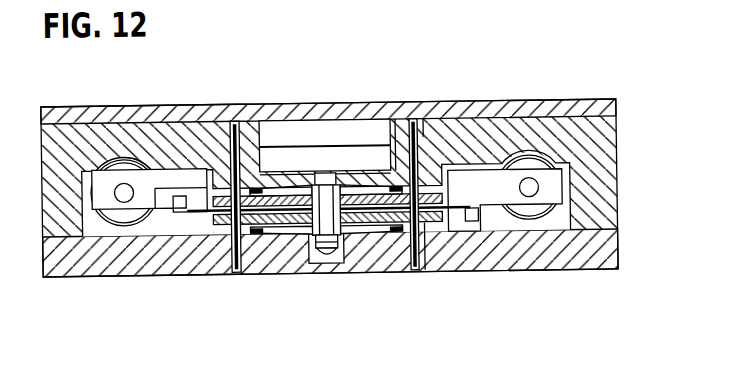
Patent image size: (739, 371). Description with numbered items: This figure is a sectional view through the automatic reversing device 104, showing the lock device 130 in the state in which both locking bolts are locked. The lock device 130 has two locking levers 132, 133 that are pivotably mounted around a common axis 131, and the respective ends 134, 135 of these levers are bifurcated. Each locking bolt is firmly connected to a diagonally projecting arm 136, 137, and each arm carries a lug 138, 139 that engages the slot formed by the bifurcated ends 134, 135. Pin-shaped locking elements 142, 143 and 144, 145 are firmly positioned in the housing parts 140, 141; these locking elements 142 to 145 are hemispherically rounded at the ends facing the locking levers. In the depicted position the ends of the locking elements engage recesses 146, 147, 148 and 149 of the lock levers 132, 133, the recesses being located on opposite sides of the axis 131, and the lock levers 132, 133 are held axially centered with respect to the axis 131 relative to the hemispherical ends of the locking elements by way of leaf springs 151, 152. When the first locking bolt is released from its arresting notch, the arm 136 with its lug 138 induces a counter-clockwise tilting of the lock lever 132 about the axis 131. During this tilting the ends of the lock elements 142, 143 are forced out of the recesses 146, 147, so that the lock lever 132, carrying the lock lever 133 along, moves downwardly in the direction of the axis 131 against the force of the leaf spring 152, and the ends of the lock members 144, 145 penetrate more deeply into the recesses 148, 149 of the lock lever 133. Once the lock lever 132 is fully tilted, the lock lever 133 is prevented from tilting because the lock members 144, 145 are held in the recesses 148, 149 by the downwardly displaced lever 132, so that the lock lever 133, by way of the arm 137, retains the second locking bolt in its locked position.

The automatic reversing device 104 is at (555, 100).
The lock device 130 is at (347, 287).
The common axis 131 is at (313, 262).
The locking lever 132 is at (365, 182).
The locking lever 133 is at (290, 216).
The bifurcated end 134 is at (142, 229).
The bifurcated end 135 is at (512, 230).
The arm 136 is at (170, 185).
The arm 137 is at (483, 186).
The lug 138 is at (178, 214).
The lug 139 is at (472, 226).
The housing part 140 is at (600, 171).
The housing part 141 is at (585, 256).
The locking element 142 is at (242, 193).
The locking element 143 is at (424, 127).
The locking element 144 is at (230, 233).
The locking element 145 is at (420, 238).
The recess 146 is at (252, 193).
The recess 147 is at (404, 194).
The recess 148 is at (250, 236).
The recess 149 is at (437, 237).
The leaf spring 151 is at (296, 172).
The leaf spring 152 is at (375, 238).